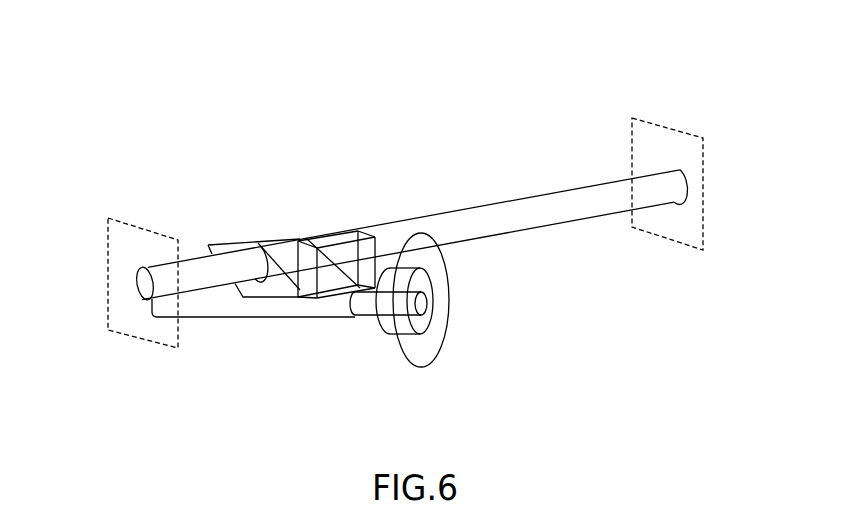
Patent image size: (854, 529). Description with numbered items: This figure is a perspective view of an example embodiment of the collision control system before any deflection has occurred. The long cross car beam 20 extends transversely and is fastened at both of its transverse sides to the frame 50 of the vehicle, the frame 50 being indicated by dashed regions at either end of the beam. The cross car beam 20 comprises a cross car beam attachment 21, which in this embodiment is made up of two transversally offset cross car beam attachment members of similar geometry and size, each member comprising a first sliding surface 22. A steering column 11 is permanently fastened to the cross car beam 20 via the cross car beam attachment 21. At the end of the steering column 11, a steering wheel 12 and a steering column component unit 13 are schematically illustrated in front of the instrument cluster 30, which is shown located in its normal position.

The steering column 11 is at (322, 305).
The steering wheel 12 is at (453, 293).
The steering column component unit 13 is at (380, 328).
The cross car beam 20 is at (475, 223).
The cross car beam attachment 21 is at (262, 247).
The first sliding surface 22 is at (278, 262).
The instrument cluster 30 is at (347, 247).
The frame 50 is at (150, 247).